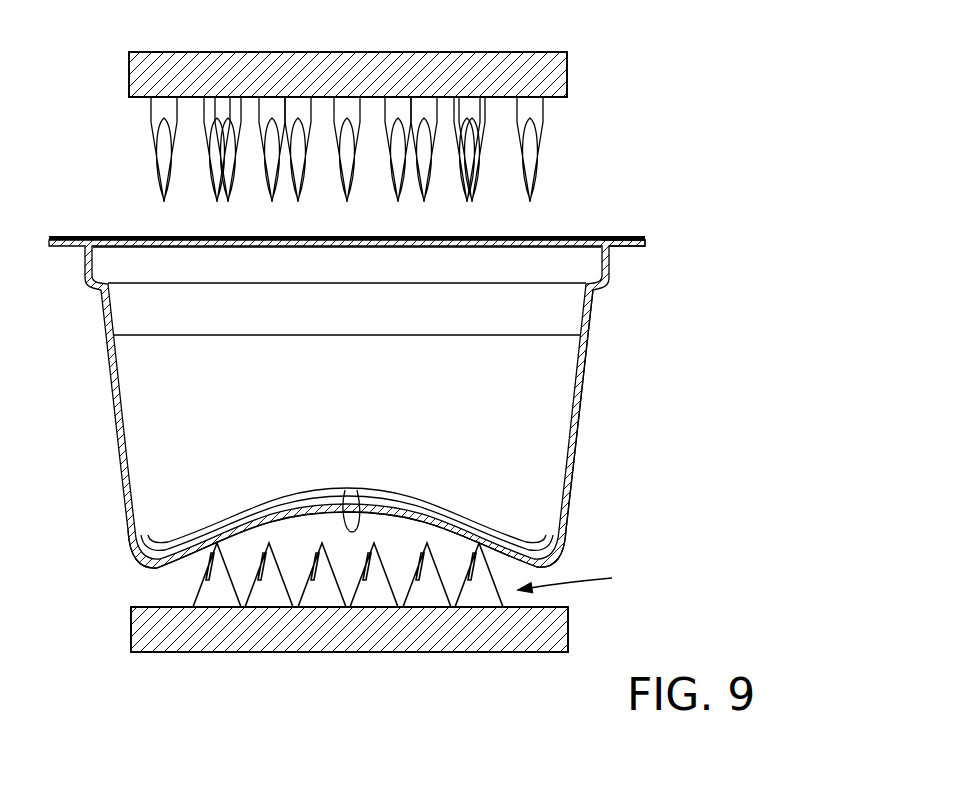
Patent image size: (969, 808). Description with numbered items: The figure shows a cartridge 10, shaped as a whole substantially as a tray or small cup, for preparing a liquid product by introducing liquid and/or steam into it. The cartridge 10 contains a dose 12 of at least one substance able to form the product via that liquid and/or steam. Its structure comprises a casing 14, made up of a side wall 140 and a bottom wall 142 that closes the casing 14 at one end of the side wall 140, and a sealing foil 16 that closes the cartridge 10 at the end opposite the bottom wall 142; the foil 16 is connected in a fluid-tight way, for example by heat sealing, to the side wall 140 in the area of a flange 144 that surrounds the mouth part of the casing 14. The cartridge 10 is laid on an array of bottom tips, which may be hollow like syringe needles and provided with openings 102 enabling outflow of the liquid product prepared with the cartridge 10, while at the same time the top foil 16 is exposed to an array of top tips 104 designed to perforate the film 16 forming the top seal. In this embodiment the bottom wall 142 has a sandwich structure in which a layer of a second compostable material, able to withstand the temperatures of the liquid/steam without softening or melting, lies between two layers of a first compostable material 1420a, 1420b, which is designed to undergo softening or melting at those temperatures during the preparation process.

The cartridge 10 is at (665, 112).
The top tips 104 is at (500, 190).
The sealing foil 16 is at (143, 235).
The dose 12 is at (165, 403).
The flange 144 is at (623, 247).
The side wall 140 is at (578, 392).
The casing 14 is at (389, 386).
The bottom wall 142 is at (192, 563).
The layer of first compostable material 1420a is at (330, 492).
The layer of first compostable material 1420b is at (358, 500).
The openings 102 is at (260, 580).